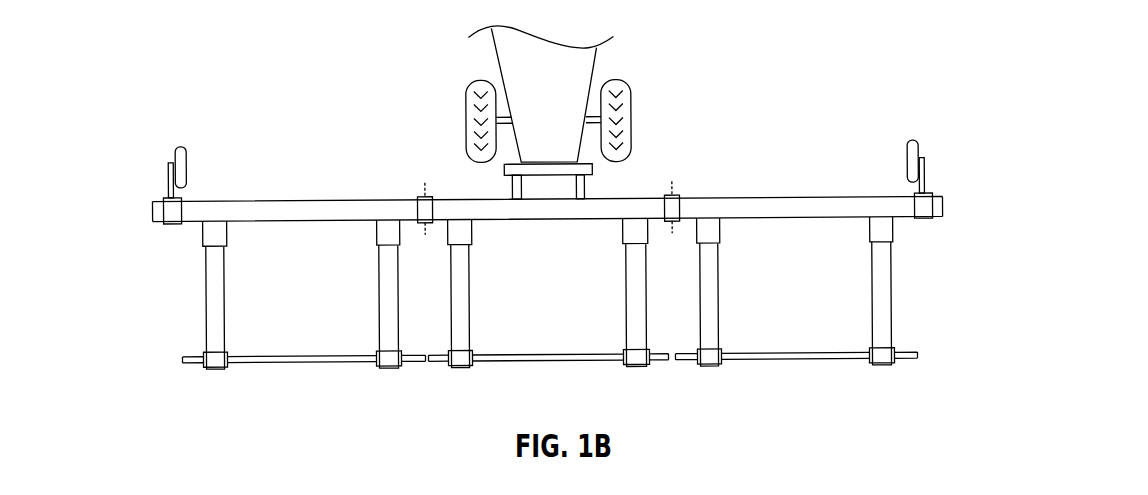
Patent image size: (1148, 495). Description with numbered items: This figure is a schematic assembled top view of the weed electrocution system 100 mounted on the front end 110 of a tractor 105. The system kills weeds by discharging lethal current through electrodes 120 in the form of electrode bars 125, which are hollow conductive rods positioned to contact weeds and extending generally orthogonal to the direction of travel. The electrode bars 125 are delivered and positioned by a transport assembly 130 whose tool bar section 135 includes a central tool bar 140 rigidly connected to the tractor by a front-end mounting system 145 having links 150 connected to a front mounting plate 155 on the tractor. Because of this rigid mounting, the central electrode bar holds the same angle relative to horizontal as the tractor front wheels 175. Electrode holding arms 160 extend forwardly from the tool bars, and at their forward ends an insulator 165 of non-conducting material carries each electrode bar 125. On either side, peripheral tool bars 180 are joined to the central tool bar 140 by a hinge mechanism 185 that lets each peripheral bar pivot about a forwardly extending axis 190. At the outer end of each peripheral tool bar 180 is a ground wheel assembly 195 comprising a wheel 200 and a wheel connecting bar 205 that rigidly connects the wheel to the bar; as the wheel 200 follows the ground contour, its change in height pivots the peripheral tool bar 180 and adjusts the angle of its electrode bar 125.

The weed electrocution system 100 is at (822, 39).
The tractor 105 is at (553, 88).
The front end 110 is at (666, 96).
The electrodes 120 is at (957, 341).
The electrode bars 125 is at (350, 362).
The transport assembly 130 is at (847, 124).
The tool bar section 135 is at (322, 150).
The central tool bar 140 is at (540, 221).
The front-end mounting system 145 is at (667, 161).
The links 150 is at (512, 190).
The front mounting plate 155 is at (553, 168).
The electrode holding arms 160 is at (206, 305).
The insulator 165 is at (206, 366).
The tractor front wheels 175 is at (465, 117).
The peripheral tool bars 180 is at (272, 199).
The hinge mechanism 185 is at (417, 176).
The forwardly extending axis 190 is at (425, 236).
The ground wheel assembly 195 is at (165, 137).
The wheel 200 is at (188, 166).
The wheel connecting bar 205 is at (169, 176).